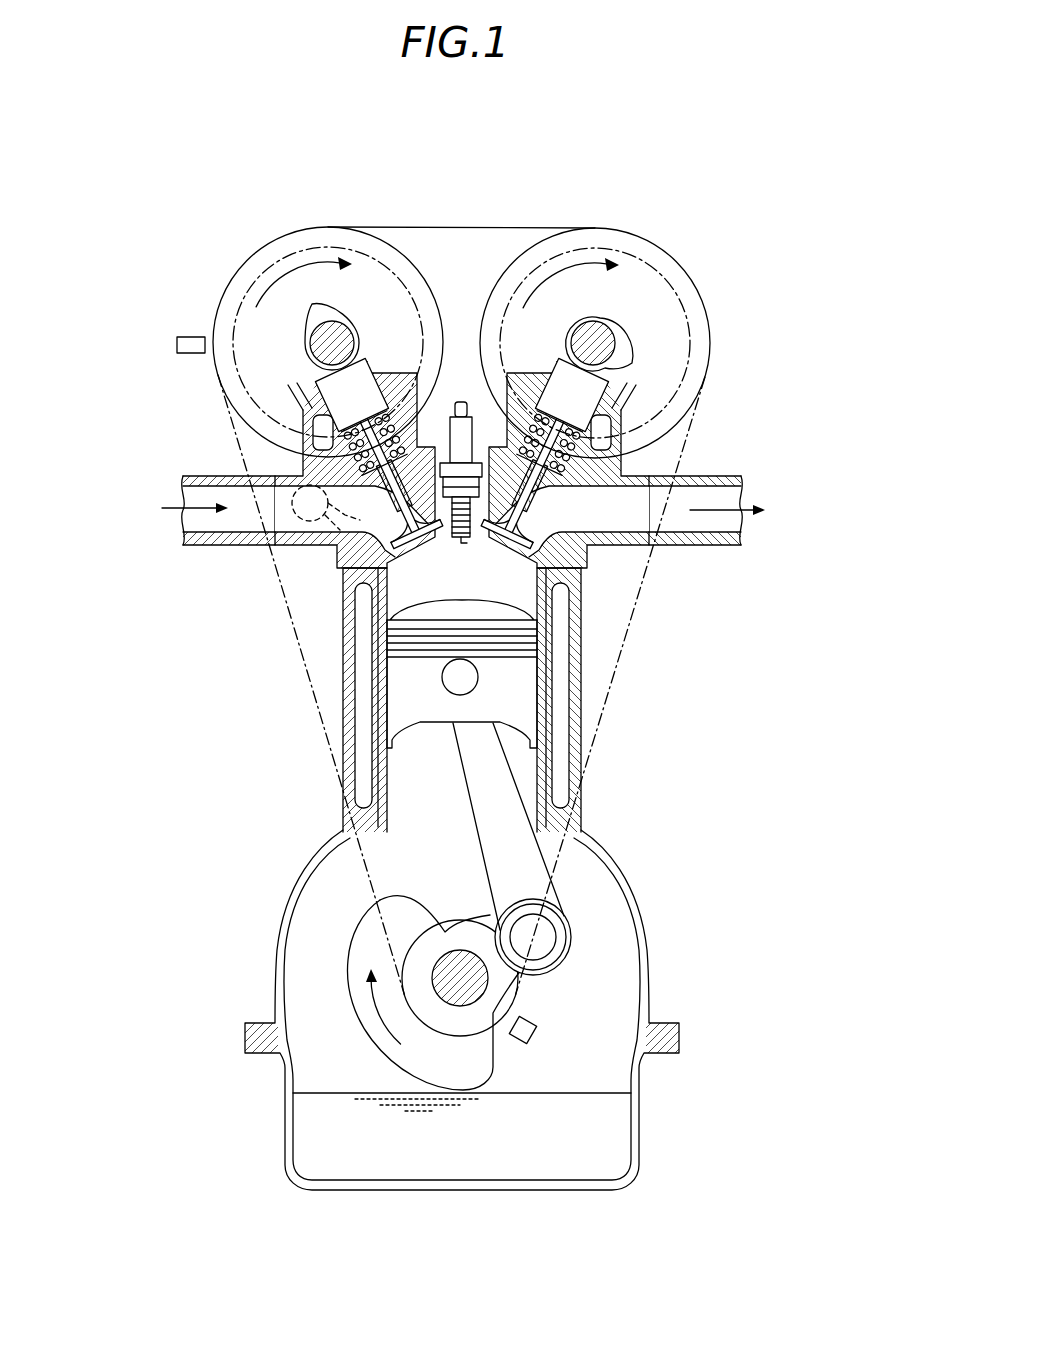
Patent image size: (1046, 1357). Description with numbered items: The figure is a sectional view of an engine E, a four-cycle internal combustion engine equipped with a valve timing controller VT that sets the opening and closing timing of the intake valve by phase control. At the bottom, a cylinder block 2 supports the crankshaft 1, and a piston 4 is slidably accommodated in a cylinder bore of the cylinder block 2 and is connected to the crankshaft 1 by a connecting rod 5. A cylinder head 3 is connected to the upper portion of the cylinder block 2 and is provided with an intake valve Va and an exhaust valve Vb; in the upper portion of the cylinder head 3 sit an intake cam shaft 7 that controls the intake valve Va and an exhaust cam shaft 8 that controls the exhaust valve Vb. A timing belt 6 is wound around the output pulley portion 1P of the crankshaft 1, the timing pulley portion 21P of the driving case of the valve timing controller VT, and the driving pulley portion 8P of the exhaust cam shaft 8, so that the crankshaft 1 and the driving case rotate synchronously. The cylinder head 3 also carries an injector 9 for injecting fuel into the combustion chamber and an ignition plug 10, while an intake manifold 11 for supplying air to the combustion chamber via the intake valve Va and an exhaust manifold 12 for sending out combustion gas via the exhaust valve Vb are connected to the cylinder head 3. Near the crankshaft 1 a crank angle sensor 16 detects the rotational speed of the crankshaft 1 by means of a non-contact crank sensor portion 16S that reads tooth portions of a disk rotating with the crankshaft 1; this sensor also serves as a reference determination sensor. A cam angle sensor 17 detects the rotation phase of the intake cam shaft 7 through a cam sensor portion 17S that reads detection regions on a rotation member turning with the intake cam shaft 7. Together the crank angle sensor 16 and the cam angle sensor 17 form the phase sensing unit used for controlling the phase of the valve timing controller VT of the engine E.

The crankshaft 1 is at (458, 950).
The output pulley portion 1P is at (400, 950).
The cylinder block 2 is at (582, 720).
The cylinder head 3 is at (585, 553).
The piston 4 is at (527, 668).
The connecting rod 5 is at (470, 768).
The timing belt 6 is at (306, 678).
The intake cam shaft 7 is at (310, 340).
The exhaust cam shaft 8 is at (612, 326).
The driving pulley portion 8P is at (505, 262).
The timing pulley portion 21P is at (405, 255).
The injector 9 is at (338, 553).
The ignition plug 10 is at (461, 400).
The intake manifold 11 is at (222, 470).
The exhaust manifold 12 is at (700, 476).
The intake valve Va is at (428, 548).
The exhaust valve Vb is at (520, 535).
The valve timing controller VT is at (287, 310).
The crank angle sensor 16 is at (535, 1022).
The crank sensor portion 16S is at (566, 1007).
The cam angle sensor 17 is at (177, 345).
The cam sensor portion 17S is at (142, 349).
The engine E is at (700, 612).